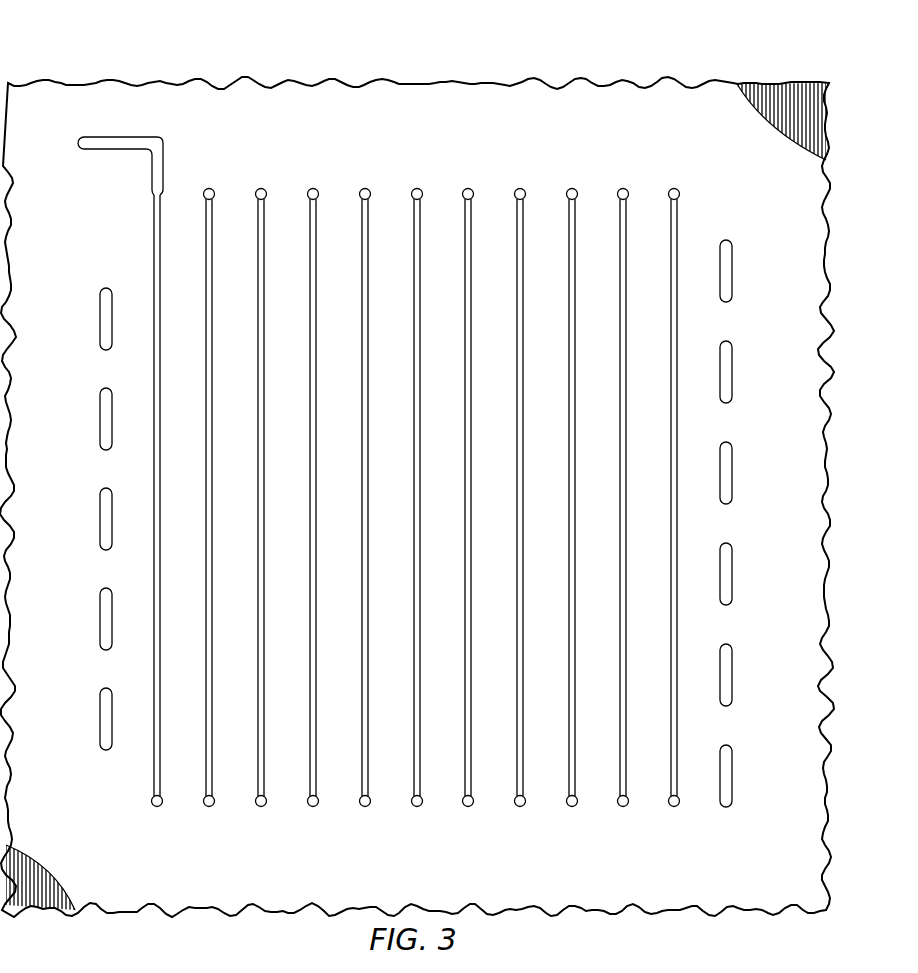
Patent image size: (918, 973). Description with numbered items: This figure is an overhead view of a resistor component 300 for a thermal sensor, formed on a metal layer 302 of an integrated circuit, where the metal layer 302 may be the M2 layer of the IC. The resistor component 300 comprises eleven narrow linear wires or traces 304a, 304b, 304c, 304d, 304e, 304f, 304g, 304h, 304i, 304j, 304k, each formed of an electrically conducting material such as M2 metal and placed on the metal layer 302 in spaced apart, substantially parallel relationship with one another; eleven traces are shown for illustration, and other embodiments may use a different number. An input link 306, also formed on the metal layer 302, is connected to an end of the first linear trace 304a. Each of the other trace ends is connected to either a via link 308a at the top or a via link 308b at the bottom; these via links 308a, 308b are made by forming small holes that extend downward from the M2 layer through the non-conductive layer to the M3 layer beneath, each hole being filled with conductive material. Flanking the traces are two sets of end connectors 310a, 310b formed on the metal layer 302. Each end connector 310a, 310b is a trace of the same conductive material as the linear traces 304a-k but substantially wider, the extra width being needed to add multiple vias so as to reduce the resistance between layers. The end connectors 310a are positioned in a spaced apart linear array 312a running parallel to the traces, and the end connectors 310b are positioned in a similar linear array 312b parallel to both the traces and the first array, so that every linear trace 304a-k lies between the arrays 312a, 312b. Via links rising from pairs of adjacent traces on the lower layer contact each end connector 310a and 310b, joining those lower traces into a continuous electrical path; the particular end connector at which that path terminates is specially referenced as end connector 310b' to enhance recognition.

The resistor component 300 is at (417, 475).
The metal layer 302 is at (378, 83).
The linear trace 304a is at (154, 243).
The linear trace 304b is at (212, 790).
The linear trace 304c is at (266, 208).
The linear trace 304d is at (316, 790).
The linear trace 304e is at (369, 208).
The linear trace 304f is at (420, 790).
The linear trace 304g is at (472, 208).
The linear trace 304h is at (523, 790).
The linear trace 304i is at (576, 208).
The linear trace 304j is at (626, 790).
The linear trace 304k is at (677, 222).
The input link 306 is at (137, 137).
The via link 308a is at (207, 189).
The via link 308b is at (155, 807).
The end connector 310a is at (100, 322).
The end connector 310b is at (765, 473).
The end connector 310b' is at (768, 776).
The linear array 312a is at (96, 775).
The linear array 312b is at (738, 822).